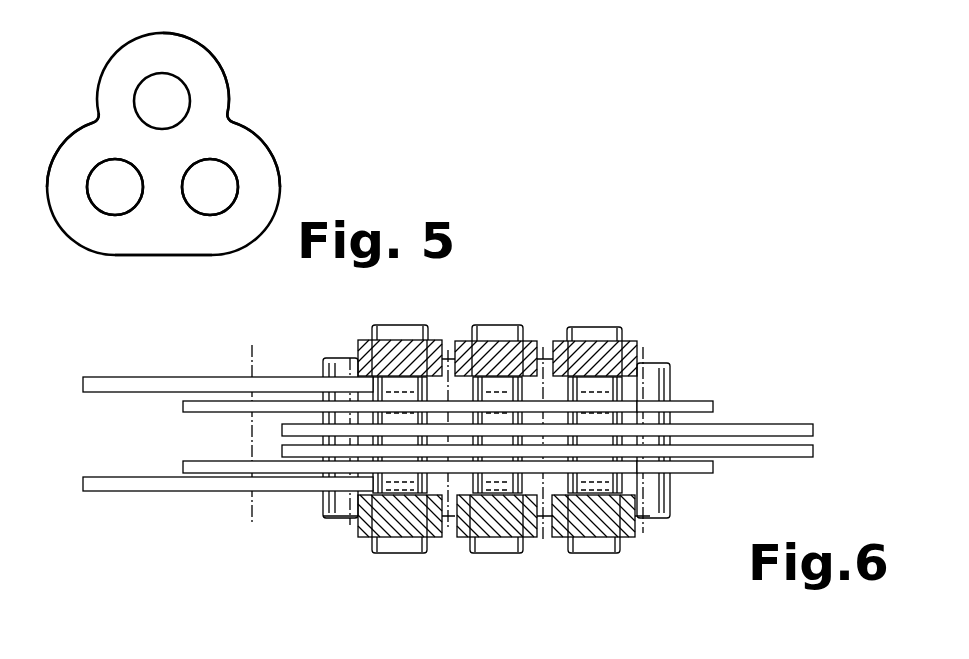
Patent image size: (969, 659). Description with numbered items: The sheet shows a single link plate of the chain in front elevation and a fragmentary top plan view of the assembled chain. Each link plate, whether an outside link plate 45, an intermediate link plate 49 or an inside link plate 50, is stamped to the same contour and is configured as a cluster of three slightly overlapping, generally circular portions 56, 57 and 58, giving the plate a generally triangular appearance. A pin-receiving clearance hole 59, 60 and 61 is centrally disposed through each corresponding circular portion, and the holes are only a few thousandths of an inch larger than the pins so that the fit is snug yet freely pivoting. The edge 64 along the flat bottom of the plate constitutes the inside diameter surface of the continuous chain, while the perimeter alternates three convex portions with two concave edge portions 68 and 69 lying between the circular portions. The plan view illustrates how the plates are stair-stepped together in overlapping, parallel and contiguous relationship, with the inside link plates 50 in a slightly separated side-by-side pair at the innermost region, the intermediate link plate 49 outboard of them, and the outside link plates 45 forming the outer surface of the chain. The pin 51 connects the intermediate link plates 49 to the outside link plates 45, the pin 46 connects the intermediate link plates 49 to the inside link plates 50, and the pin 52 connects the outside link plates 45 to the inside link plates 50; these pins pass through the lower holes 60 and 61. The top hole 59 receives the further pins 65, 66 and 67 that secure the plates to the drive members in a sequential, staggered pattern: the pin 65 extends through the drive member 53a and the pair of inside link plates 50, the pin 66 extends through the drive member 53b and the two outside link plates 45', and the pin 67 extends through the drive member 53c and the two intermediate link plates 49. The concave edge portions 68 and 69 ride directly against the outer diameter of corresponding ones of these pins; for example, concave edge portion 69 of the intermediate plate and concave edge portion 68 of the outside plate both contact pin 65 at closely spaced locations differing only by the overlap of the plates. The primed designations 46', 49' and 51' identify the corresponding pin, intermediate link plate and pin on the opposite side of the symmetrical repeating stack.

In FIG. 5, the outside link plate 45 is at (225, 144).
In FIG. 6, the outside link plates 45' is at (486, 421).
In FIG. 6, the pin 46 is at (345, 409).
In FIG. 6, the end flange 46' is at (665, 424).
In FIG. 5, the intermediate link plate 49 is at (246, 128).
In FIG. 6, the intermediate link plate 49 is at (360, 434).
In FIG. 6, the conductor 49' is at (697, 437).
In FIG. 5, the inside link plate 50 is at (293, 128).
In FIG. 6, the inside link plate 50 is at (281, 425).
In FIG. 6, the pin 51 is at (266, 415).
In FIG. 6, the center line 51' is at (553, 409).
In FIG. 6, the pin 52 is at (453, 342).
In FIG. 6, the drive member 53a is at (398, 535).
In FIG. 6, the drive member 53b is at (497, 532).
In FIG. 6, the drive member 53c is at (597, 532).
In FIG. 5, the circular portion 56 is at (204, 73).
In FIG. 5, the circular portion 57 is at (67, 188).
In FIG. 5, the circular portion 58 is at (267, 182).
In FIG. 5, the pin-receiving clearance hole 59 is at (165, 83).
In FIG. 5, the pin-receiving clearance hole 60 is at (103, 202).
In FIG. 5, the pin-receiving clearance hole 61 is at (208, 200).
In FIG. 5, the edge 64 is at (159, 258).
In FIG. 6, the pin 65 is at (415, 327).
In FIG. 6, the pin 66 is at (515, 325).
In FIG. 6, the pin 67 is at (613, 327).
In FIG. 5, the concave edge portion 68 is at (87, 121).
In FIG. 5, the concave edge portion 69 is at (233, 110).